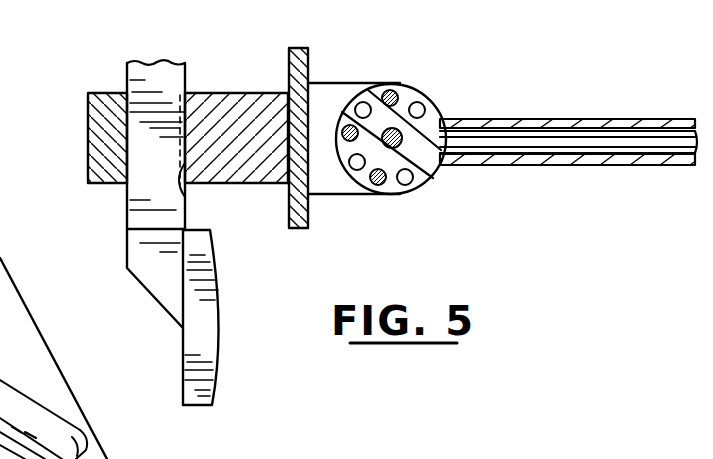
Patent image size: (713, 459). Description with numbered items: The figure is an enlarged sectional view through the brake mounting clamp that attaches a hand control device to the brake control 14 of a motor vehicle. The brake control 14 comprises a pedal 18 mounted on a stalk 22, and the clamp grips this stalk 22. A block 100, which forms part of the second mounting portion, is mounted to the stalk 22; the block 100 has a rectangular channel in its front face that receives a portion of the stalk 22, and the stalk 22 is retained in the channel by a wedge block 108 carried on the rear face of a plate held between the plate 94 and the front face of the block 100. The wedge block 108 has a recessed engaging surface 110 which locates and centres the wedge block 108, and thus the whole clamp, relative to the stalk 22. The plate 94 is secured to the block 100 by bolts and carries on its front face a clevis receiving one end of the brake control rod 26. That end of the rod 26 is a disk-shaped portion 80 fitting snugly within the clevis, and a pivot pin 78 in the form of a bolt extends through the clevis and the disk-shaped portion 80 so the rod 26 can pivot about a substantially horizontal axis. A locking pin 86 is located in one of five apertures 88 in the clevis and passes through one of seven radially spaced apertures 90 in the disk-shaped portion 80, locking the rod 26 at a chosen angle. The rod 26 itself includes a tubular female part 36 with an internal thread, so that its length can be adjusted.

The brake control 14 is at (145, 338).
The pedal 18 is at (222, 333).
The stalk 22 is at (128, 70).
The brake control rod 26 is at (612, 119).
The tubular female part 36 is at (496, 119).
The pivot pin 78 is at (392, 148).
The disk-shaped portion 80 is at (431, 100).
The pin 86 is at (344, 112).
The apertures 88 is at (376, 184).
The radially spaced apertures 90 is at (432, 178).
The plate 94 is at (298, 230).
The block 100 is at (97, 125).
The wedge block 108 is at (236, 93).
The recessed engaging surface 110 is at (188, 197).